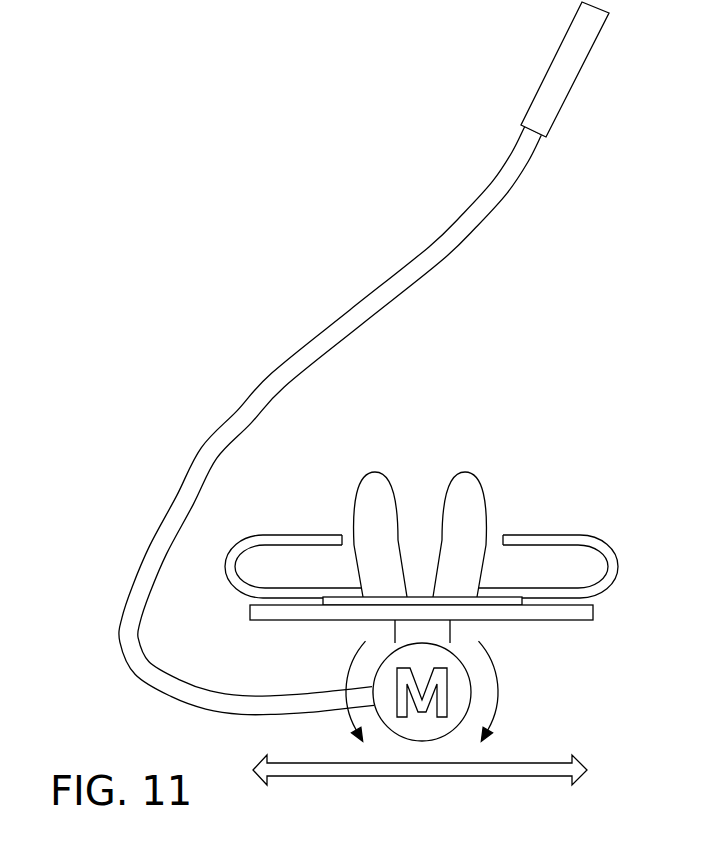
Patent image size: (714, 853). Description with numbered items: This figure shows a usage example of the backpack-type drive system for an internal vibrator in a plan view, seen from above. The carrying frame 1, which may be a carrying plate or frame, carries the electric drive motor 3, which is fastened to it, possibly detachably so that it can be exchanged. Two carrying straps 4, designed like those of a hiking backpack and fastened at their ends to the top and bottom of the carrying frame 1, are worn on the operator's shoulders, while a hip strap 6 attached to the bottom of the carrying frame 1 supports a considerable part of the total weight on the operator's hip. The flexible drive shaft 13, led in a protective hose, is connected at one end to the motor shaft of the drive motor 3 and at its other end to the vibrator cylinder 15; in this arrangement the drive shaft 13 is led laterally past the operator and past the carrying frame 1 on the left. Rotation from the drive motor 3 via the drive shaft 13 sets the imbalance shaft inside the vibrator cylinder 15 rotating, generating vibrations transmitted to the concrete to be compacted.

The carrying frame 1 is at (593, 613).
The electric drive motor 3 is at (473, 697).
The carrying straps 4 is at (450, 473).
The hip strap 6 is at (600, 548).
The flexible drive shaft 13 is at (202, 455).
The vibrator cylinder 15 is at (545, 78).